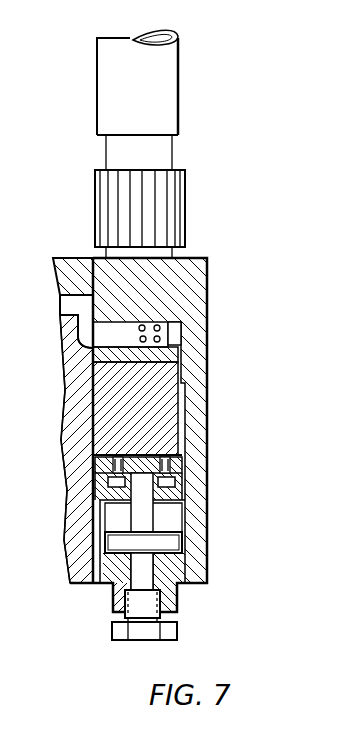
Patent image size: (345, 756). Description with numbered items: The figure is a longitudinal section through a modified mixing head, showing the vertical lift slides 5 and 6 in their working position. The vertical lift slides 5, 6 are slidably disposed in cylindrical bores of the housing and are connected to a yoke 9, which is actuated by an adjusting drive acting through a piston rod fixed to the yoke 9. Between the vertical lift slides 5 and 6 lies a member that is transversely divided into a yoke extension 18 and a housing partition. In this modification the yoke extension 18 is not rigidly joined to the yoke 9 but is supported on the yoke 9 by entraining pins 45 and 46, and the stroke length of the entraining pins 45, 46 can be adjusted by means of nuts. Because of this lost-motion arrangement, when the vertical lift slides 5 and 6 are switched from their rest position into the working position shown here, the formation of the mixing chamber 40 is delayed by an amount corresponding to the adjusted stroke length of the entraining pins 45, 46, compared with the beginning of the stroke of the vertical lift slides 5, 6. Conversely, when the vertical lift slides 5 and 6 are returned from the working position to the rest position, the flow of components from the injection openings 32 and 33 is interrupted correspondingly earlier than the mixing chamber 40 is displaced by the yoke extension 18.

The vertical lift slide 5 is at (122, 334).
The vertical lift slide 6 is at (76, 449).
The yoke 9 is at (183, 489).
The yoke extension 18 is at (158, 404).
The injection opening 32 is at (160, 326).
The injection opening 33 is at (157, 333).
The mixing chamber 40 is at (178, 341).
The entraining pin 45 is at (92, 453).
The entraining pin 46 is at (93, 486).